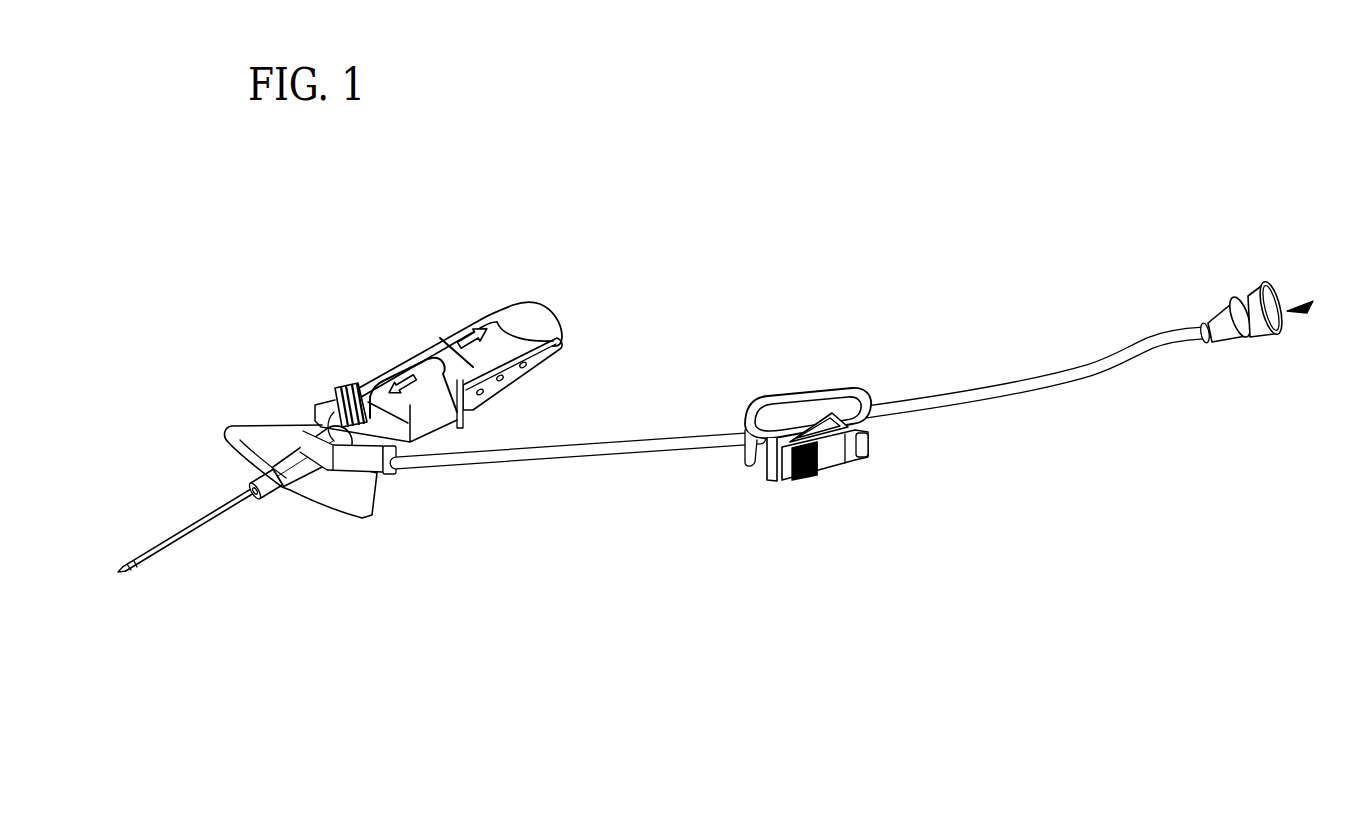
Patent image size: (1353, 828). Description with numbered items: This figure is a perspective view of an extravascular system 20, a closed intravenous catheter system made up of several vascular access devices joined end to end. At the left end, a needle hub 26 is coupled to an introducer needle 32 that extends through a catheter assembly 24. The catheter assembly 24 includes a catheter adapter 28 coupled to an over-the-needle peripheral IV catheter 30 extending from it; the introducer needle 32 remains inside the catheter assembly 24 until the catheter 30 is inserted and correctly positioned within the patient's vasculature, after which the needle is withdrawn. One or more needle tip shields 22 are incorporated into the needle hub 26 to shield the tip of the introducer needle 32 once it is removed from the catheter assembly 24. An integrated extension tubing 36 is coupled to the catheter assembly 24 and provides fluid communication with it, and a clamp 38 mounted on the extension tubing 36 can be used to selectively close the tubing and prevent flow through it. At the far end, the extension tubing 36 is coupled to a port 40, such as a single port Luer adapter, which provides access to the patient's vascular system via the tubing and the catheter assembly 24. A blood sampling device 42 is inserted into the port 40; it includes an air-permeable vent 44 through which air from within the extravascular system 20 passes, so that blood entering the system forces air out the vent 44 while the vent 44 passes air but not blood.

The extravascular system 20 is at (660, 186).
The needle tip shield 22 is at (463, 413).
The catheter assembly 24 is at (277, 366).
The needle hub 26 is at (460, 270).
The catheter adapter 28 is at (315, 465).
The catheter 30 is at (201, 528).
The introducer needle 32 is at (123, 572).
The extension tubing 36 is at (960, 402).
The clamp 38 is at (828, 462).
The port 40 is at (1218, 308).
The blood sampling device 42 is at (1247, 300).
The vent 44 is at (1310, 306).